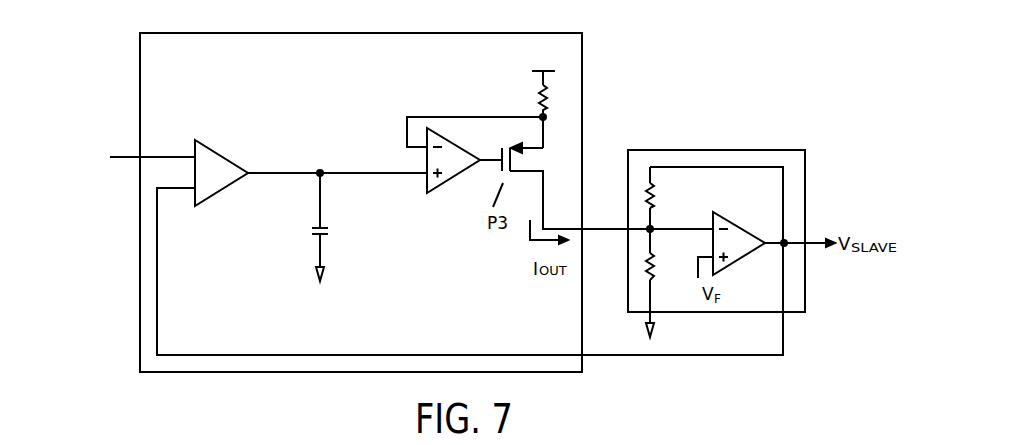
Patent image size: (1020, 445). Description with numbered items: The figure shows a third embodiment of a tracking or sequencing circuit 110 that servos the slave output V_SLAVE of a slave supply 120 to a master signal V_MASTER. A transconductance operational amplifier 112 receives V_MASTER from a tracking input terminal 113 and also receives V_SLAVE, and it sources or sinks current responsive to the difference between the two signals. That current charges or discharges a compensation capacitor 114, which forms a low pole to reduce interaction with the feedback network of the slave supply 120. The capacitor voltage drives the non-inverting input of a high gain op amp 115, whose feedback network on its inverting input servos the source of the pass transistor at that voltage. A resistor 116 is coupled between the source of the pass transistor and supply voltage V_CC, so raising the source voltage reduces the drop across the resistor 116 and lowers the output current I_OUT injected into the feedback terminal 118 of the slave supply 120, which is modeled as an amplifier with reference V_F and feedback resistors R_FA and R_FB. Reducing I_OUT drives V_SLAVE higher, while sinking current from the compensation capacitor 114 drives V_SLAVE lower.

The tracking or sequencing circuit 110 is at (140, 282).
The transconductance operational amplifier 112 is at (222, 156).
The tracking input terminal 113 is at (127, 156).
The compensation capacitor 114 is at (330, 230).
The high gain op amp 115 is at (457, 140).
The resistor 116 is at (548, 102).
The feedback terminal 118 is at (650, 229).
The slave supply 120 is at (747, 165).